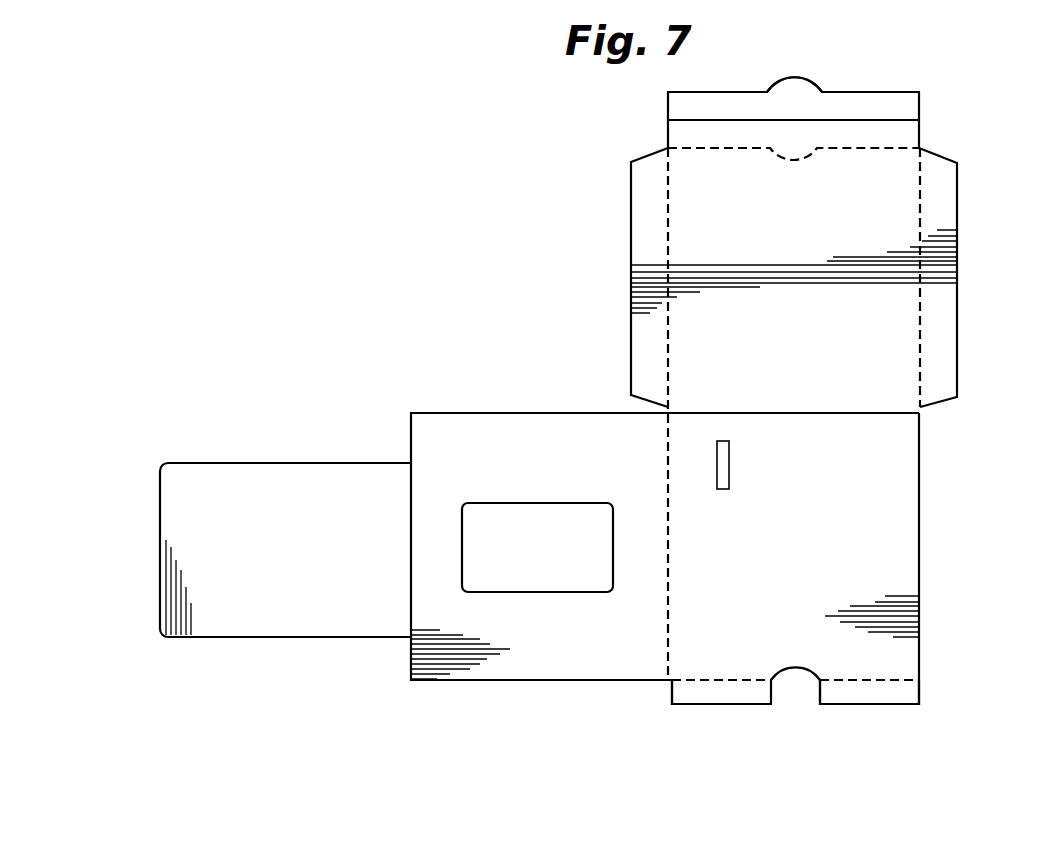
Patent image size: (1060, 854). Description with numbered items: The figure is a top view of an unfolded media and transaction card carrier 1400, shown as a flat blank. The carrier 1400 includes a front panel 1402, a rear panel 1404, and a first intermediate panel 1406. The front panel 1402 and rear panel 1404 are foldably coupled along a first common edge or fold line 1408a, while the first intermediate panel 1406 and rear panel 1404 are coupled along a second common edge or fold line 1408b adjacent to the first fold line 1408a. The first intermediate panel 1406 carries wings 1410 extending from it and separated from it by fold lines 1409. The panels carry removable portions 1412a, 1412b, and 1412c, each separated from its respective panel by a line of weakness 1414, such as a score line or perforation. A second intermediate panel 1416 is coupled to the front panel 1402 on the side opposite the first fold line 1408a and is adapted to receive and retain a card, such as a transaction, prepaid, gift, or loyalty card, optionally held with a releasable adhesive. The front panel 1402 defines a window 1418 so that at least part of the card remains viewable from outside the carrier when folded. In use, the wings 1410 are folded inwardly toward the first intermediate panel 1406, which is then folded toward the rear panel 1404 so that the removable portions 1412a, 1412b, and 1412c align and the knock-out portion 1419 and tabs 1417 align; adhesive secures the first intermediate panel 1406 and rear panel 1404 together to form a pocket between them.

The carrier 1400 is at (285, 754).
The front panel 1402 is at (438, 430).
The rear panel 1404 is at (908, 573).
The first intermediate panel 1406 is at (900, 340).
The first fold line 1408a is at (667, 628).
The second fold line 1408b is at (900, 415).
The fold lines 1409 is at (920, 195).
The wings 1410 is at (940, 222).
The removable portion 1412a is at (892, 128).
The removable portion 1412b is at (752, 694).
The removable portion 1412c is at (855, 697).
The line of weakness 1414 is at (706, 148).
The second intermediate panel 1416 is at (223, 472).
The tabs 1417 is at (786, 88).
The window 1418 is at (502, 578).
The knock-out portion 1419 is at (795, 698).